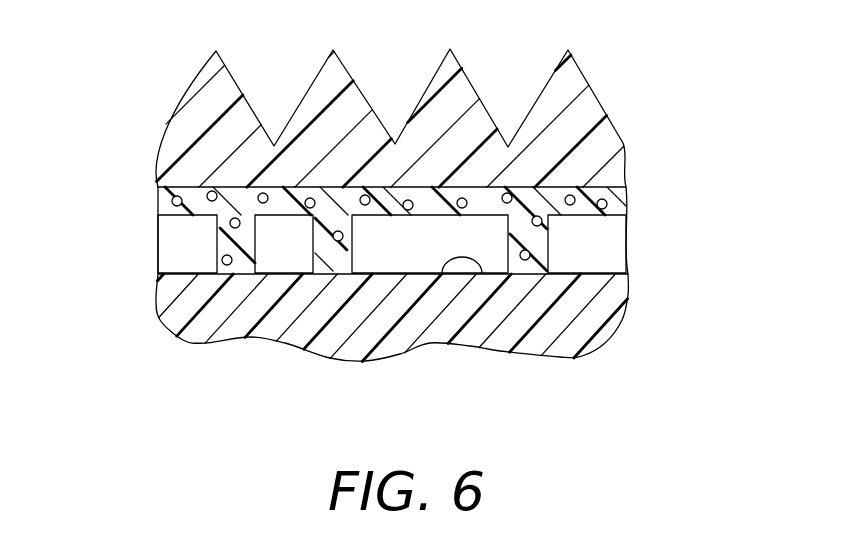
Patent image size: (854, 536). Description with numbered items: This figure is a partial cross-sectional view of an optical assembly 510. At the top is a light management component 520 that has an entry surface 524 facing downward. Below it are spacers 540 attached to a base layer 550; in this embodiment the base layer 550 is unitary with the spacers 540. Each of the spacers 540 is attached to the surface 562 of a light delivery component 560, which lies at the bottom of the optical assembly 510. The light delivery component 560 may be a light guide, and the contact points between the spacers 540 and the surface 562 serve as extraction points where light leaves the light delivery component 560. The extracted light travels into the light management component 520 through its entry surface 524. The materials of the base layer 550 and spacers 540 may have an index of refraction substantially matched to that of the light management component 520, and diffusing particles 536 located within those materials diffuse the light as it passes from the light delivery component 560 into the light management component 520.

The optical assembly 510 is at (130, 89).
The light management component 520 is at (585, 107).
The entry surface 524 is at (486, 188).
The diffusing particles 536 is at (613, 201).
The spacers 540 is at (254, 250).
The base layer 550 is at (166, 193).
The light delivery component 560 is at (594, 311).
The surface 562 is at (478, 268).